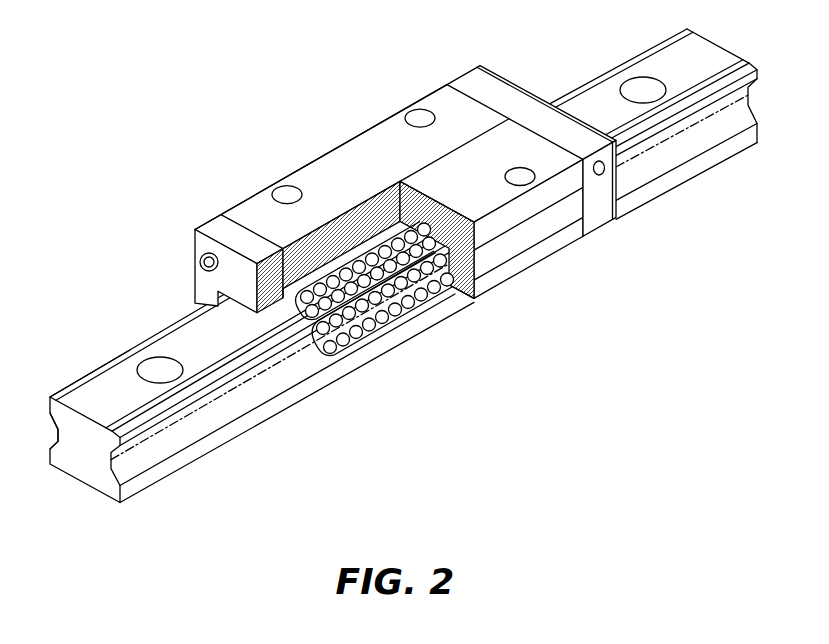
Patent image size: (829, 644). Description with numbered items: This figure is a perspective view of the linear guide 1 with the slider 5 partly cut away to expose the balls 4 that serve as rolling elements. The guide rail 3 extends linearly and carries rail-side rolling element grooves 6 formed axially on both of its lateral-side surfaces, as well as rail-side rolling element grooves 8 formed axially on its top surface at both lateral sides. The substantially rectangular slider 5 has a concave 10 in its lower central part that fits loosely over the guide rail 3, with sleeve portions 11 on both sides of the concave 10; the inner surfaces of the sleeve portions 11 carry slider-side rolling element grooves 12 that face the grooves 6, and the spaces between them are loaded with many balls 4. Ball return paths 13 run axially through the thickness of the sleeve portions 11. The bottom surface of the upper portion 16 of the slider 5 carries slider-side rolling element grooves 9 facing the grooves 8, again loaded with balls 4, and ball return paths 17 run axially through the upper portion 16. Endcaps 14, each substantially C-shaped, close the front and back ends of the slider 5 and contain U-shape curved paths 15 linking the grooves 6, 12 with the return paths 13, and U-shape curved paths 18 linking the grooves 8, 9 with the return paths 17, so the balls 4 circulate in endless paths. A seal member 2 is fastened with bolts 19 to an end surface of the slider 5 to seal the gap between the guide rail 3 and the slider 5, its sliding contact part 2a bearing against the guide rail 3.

The linear guide 1 is at (347, 72).
The seal member 2 is at (205, 284).
The sliding contact part 2a is at (187, 330).
The guide rail 3 is at (83, 372).
The balls 4 is at (374, 338).
The slider 5 is at (438, 81).
The rail-side rolling element grooves 6 is at (85, 427).
The rail-side rolling element grooves 8 is at (73, 384).
The slider-side rolling element grooves 9 is at (397, 232).
The concave 10 is at (277, 370).
The sleeve portions 11 is at (252, 213).
The slider-side rolling element grooves 12 is at (452, 303).
The ball return paths 13 is at (407, 348).
The endcaps 14 is at (474, 80).
The U-shape curved paths 15 is at (322, 368).
The upper portion 16 is at (340, 160).
The ball return paths 17 is at (368, 215).
The U-shape curved paths 18 is at (305, 358).
The bolts 19 is at (198, 262).